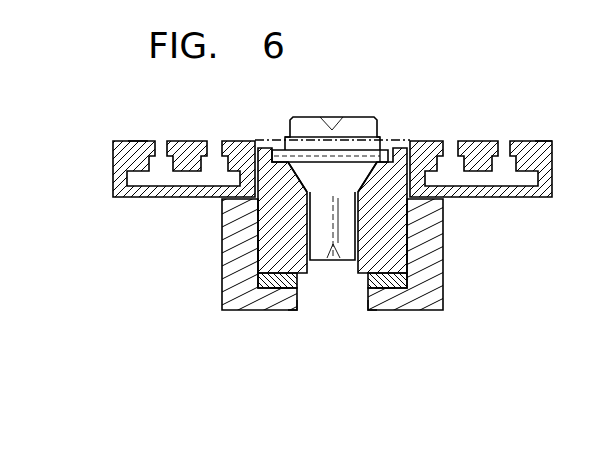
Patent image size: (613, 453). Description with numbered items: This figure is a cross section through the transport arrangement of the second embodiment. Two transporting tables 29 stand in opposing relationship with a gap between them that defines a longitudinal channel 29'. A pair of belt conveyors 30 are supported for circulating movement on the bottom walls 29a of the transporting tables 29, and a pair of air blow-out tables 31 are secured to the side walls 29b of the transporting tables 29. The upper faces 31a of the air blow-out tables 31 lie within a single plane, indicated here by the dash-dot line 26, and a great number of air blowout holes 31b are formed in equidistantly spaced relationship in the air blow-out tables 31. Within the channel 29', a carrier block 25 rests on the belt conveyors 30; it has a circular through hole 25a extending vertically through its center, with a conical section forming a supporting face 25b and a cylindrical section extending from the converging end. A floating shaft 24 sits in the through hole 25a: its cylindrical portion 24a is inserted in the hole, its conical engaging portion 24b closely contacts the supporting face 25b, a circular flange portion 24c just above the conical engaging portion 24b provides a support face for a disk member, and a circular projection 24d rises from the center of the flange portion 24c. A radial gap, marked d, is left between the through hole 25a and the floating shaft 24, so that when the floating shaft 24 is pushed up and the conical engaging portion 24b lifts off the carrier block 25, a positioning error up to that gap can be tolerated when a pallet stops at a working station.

The floating shaft 24 is at (295, 140).
The cylindrical portion 24a is at (317, 250).
The conical engaging portion 24b is at (386, 160).
The circular flange portion 24c is at (274, 153).
The circular projection 24d is at (306, 124).
The clearance dimension d is at (381, 148).
The carrier block 25 is at (277, 218).
The through hole 25a is at (307, 245).
The supporting face 25b is at (256, 200).
The reference plane line 26 is at (465, 140).
The transporting tables 29 is at (330, 271).
The channel 29' is at (448, 254).
The bottom walls 29a is at (365, 310).
The side walls 29b is at (233, 248).
The belt conveyors 30 is at (275, 282).
The air blow-out tables 31 is at (113, 172).
The upper faces 31a is at (138, 141).
The air blowout holes 31b is at (218, 141).